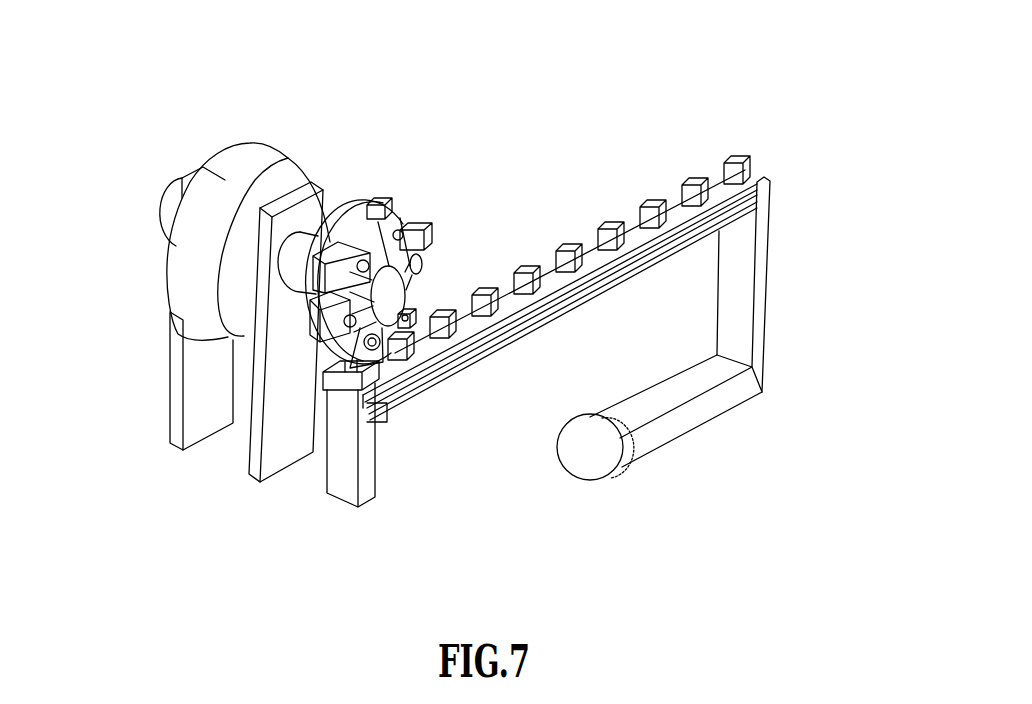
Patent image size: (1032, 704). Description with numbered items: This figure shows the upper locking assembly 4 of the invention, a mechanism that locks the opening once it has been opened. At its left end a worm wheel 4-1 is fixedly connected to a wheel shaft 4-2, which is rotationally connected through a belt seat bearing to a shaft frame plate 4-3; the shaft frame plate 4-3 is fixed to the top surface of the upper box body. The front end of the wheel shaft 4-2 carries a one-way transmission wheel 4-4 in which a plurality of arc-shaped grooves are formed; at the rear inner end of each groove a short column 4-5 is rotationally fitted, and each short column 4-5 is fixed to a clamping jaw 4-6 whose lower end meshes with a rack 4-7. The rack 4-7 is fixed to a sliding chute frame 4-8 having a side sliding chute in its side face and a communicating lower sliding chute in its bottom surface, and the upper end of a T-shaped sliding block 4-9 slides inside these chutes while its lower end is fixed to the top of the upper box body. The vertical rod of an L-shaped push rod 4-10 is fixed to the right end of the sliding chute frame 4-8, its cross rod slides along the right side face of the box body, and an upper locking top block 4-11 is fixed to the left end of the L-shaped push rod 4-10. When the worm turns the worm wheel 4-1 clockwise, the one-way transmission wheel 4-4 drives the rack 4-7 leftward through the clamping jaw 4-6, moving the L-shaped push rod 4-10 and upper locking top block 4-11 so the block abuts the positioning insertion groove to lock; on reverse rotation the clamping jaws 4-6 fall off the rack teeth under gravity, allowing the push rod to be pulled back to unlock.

The upper locking assembly 4 is at (236, 135).
The worm wheel 4-1 is at (250, 176).
The wheel shaft 4-2 is at (300, 255).
The shaft frame plate 4-3 is at (176, 321).
The one-way transmission wheel 4-4 is at (385, 232).
The short column 4-5 is at (390, 367).
The clamping jaw 4-6 is at (350, 386).
The rack 4-7 is at (594, 250).
The sliding chute frame 4-8 is at (603, 290).
The T-shaped sliding block 4-9 is at (343, 488).
The L-shaped push rod 4-10 is at (748, 258).
The upper locking top block 4-11 is at (599, 463).